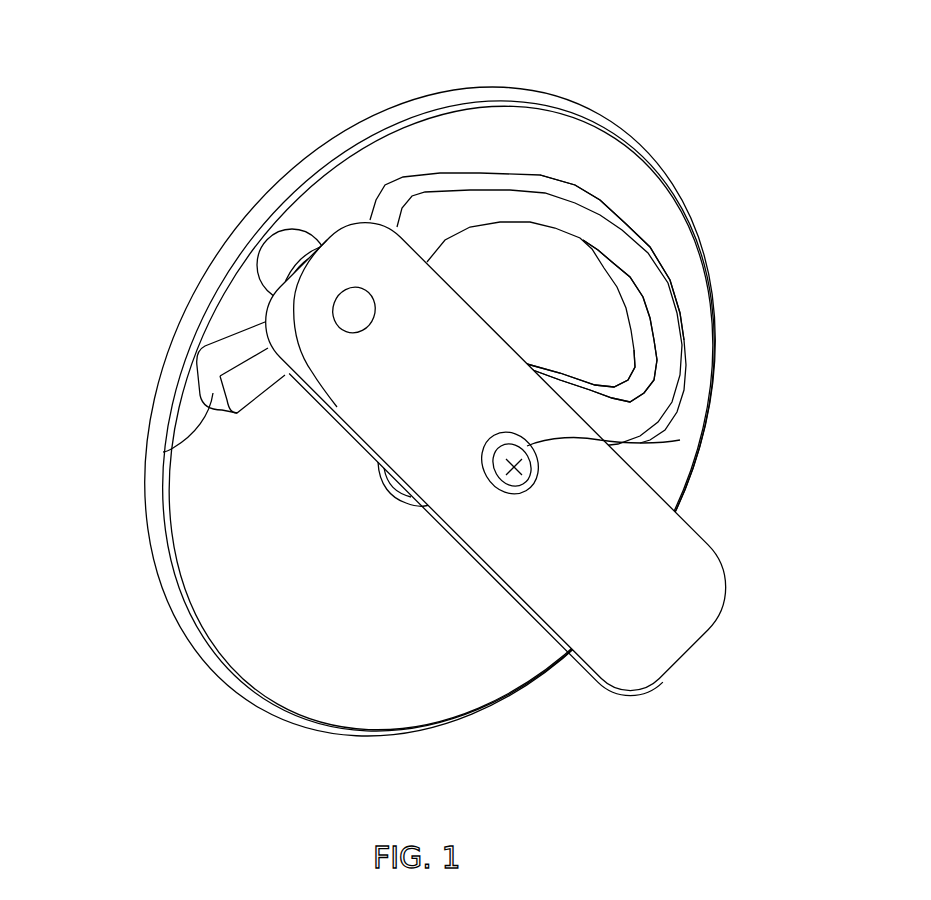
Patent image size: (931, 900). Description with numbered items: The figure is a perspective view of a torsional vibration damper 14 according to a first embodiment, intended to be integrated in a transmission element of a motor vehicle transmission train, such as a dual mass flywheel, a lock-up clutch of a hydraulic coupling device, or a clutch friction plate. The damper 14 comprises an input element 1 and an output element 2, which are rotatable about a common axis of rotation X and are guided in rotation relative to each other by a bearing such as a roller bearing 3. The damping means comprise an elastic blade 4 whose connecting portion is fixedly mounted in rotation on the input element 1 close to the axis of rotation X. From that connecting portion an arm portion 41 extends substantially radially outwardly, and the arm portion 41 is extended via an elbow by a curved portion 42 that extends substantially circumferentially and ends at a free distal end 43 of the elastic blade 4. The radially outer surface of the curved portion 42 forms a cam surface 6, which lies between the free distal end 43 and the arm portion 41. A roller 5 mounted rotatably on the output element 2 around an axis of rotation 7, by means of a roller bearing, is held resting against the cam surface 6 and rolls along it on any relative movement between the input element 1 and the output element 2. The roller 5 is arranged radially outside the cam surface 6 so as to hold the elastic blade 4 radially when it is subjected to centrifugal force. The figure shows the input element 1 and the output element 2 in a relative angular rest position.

The input element 1 is at (408, 147).
The output element 2 is at (680, 574).
The roller bearing 3 is at (680, 440).
The elastic blade 4 is at (440, 222).
The arm portion 41 is at (613, 413).
The curved portion 42 is at (587, 223).
The free distal end 43 is at (173, 450).
The roller 5 is at (282, 257).
The cam surface 6 is at (262, 333).
The axis of rotation 7 is at (354, 306).
The torsional vibration damper 14 is at (722, 195).
The axis of rotation X is at (527, 470).